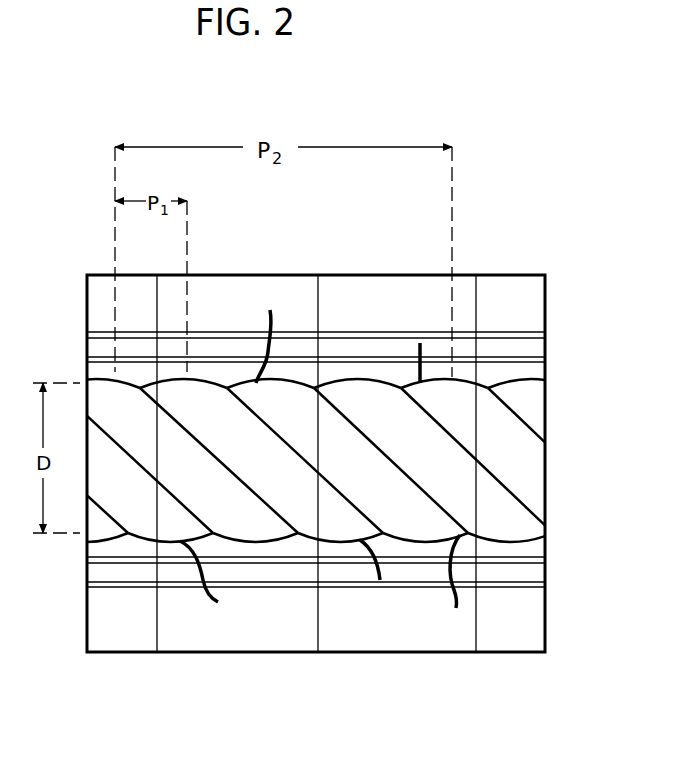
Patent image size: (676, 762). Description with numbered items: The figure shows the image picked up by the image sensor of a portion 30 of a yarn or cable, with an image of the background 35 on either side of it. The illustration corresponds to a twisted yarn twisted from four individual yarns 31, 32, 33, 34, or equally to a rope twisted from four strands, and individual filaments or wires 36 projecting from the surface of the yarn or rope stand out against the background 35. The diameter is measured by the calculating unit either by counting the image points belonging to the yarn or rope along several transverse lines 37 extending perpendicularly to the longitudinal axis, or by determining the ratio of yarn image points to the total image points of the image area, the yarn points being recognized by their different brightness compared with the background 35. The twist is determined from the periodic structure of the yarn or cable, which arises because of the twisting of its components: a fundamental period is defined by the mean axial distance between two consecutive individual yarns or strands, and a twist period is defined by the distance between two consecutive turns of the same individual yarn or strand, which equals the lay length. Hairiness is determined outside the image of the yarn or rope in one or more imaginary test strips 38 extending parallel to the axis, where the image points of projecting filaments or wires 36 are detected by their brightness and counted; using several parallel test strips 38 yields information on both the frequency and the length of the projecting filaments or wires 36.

The portion of the yarn or cable 30 is at (496, 385).
The individual yarn 31 is at (193, 479).
The individual yarn 32 is at (279, 479).
The individual yarn 33 is at (367, 479).
The individual yarn 34 is at (121, 489).
The background 35 is at (537, 292).
The filaments or wires 36 is at (268, 322).
The transverse lines 37 is at (155, 615).
The test strips 38 is at (368, 362).